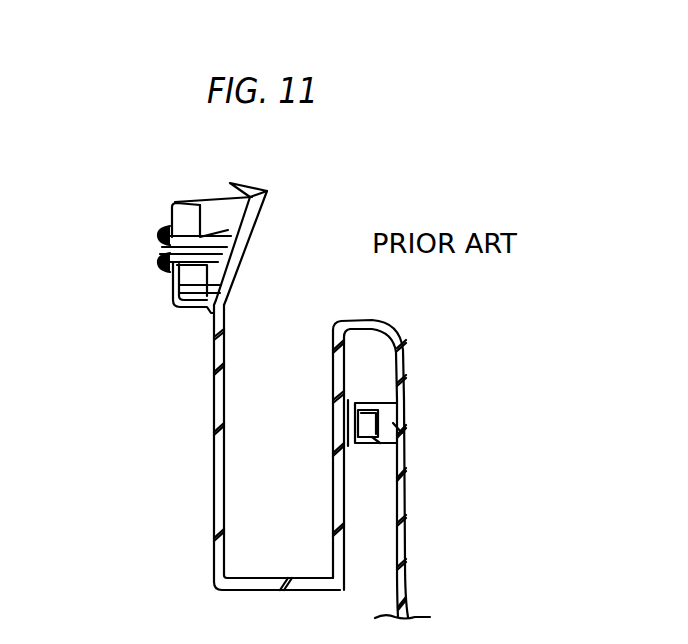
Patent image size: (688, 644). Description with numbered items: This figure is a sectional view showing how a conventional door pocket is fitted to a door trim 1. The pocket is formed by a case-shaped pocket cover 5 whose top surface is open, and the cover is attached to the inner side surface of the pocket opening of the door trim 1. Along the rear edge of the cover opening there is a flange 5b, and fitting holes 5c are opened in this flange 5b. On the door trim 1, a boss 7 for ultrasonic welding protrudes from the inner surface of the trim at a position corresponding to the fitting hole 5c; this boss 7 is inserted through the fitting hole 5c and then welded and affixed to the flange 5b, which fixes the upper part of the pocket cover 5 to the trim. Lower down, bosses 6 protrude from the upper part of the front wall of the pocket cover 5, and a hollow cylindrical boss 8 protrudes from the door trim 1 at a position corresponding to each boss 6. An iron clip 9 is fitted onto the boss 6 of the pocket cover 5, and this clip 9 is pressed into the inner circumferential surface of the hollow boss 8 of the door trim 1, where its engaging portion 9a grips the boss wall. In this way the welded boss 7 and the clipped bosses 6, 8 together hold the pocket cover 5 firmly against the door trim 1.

The door trim 1 is at (405, 448).
The pocket cover 5 is at (217, 510).
The flange 5b is at (170, 208).
The fitting hole 5c is at (170, 287).
The boss 6 is at (355, 423).
The boss for ultrasonic welding 7 is at (195, 250).
The hollow cylindrical boss 8 is at (370, 402).
The iron clip 9 is at (368, 428).
The clip leg 9a is at (378, 445).